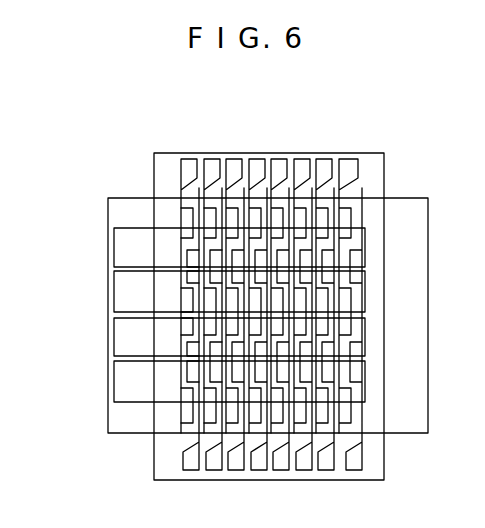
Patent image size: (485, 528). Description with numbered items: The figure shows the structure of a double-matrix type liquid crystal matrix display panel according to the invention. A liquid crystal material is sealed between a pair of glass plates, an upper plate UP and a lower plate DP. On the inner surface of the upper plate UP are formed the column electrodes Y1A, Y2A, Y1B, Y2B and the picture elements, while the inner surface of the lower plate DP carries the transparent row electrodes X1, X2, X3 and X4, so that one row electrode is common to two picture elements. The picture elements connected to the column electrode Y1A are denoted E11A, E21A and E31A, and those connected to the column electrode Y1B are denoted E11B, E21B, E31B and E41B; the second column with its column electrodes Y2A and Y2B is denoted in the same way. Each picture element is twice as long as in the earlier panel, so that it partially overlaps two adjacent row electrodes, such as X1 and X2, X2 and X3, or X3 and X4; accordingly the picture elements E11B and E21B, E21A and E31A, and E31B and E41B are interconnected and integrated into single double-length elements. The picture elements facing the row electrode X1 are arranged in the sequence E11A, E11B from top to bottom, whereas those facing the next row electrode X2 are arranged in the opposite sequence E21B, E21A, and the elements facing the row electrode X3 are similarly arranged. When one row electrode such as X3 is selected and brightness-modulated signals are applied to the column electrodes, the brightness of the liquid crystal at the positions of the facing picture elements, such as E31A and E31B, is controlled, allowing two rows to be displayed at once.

The upper plate UP is at (384, 163).
The lower plate DP is at (428, 240).
The row electrode X1 is at (120, 249).
The row electrode X2 is at (120, 290).
The row electrode X3 is at (120, 338).
The row electrode X4 is at (120, 381).
The column electrode Y1A is at (190, 170).
The column electrode Y2A is at (212, 170).
The column electrode Y1B is at (192, 468).
The column electrode Y2B is at (212, 471).
The picture element E11A is at (185, 235).
The picture element E11B is at (188, 255).
The picture element E21A is at (188, 305).
The picture element E21B is at (187, 278).
The picture element E31A is at (185, 333).
The picture element E31B is at (185, 353).
The picture element E41B is at (185, 370).